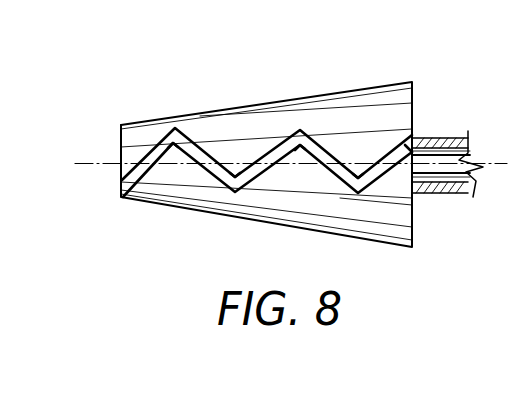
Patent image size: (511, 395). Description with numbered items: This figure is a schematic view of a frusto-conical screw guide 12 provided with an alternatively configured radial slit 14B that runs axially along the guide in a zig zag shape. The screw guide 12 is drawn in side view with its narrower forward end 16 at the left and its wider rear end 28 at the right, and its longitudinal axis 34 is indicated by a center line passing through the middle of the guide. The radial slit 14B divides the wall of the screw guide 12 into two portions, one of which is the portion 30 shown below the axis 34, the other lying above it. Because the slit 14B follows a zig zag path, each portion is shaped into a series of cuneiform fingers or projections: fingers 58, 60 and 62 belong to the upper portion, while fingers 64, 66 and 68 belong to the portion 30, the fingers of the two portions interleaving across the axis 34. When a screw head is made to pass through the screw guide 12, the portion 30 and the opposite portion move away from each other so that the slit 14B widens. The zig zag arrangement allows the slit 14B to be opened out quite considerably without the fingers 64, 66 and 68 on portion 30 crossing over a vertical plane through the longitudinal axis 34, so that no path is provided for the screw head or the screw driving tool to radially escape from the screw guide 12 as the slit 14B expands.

The screw guide 12 is at (360, 88).
The radial slit 14B is at (206, 152).
The forward end 16 is at (121, 163).
The rear end 28 is at (413, 208).
The portion 30 is at (357, 208).
The longitudinal axis 34 is at (97, 162).
The finger or projection 58 is at (121, 126).
The finger or projection 60 is at (236, 170).
The finger or projection 62 is at (363, 165).
The finger or projection 64 is at (173, 152).
The finger or projection 66 is at (298, 157).
The finger or projection 68 is at (400, 170).